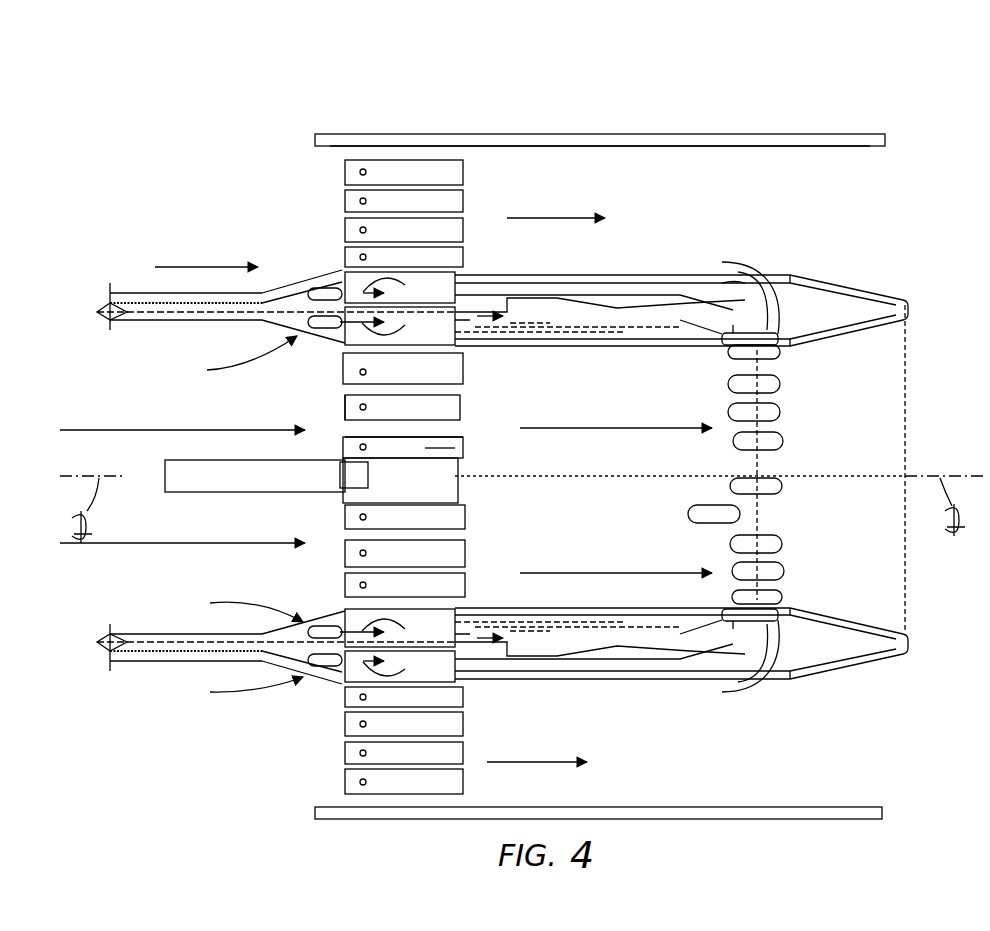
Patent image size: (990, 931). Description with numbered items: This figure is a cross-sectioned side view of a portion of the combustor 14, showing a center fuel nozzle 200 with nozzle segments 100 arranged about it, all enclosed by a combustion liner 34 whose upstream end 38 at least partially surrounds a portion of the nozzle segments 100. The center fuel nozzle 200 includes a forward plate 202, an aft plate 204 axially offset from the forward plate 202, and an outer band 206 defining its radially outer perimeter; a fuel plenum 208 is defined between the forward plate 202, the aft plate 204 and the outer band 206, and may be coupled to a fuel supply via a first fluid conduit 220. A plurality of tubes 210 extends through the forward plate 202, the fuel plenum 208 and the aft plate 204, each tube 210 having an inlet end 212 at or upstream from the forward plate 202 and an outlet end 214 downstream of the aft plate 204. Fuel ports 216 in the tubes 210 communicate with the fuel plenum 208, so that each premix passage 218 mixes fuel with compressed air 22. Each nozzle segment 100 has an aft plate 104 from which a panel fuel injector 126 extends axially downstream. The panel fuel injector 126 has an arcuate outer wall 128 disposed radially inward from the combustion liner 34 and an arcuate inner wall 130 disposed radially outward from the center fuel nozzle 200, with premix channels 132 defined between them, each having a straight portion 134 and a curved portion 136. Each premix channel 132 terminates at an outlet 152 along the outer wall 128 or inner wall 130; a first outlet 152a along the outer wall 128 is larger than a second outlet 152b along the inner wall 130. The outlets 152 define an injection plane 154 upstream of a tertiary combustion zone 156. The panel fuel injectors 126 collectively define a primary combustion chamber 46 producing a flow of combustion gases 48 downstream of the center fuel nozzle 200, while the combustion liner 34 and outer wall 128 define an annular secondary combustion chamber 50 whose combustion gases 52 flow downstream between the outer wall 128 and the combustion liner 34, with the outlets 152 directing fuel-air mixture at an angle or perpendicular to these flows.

The combustor 14 is at (870, 104).
The compressed air 22 is at (238, 264).
The combustion liner 34 is at (521, 133).
The upstream end of the combustion liner 38 is at (381, 131).
The primary combustion chamber 46 is at (655, 463).
The flow of combustion gases 48 is at (690, 427).
The secondary combustion chamber 50 is at (666, 209).
The flow of combustion gases 52 is at (577, 218).
The nozzle segment 100 is at (290, 184).
The aft plate 104 is at (458, 171).
The panel fuel injector 126 is at (581, 272).
The outer wall 128 is at (607, 272).
The inner wall 130 is at (552, 349).
The premix channel 132 is at (645, 323).
The straight portion 134 is at (612, 349).
The curved portion 136 is at (738, 290).
The outlet 152 is at (683, 272).
The first outlet 152a is at (725, 280).
The second outlet 152b is at (790, 352).
The injection plane 154 is at (765, 440).
The tertiary combustion zone 156 is at (962, 435).
The center fuel nozzle 200 is at (305, 557).
The forward plate 202 is at (345, 397).
The aft plate 204 is at (457, 391).
The outer band 206 is at (425, 353).
The fuel plenum 208 is at (440, 489).
The tube 210 is at (428, 428).
The inlet end 212 is at (343, 439).
The outlet end 214 is at (474, 446).
The fuel port 216 is at (368, 450).
The premix passage 218 is at (430, 449).
The first fluid conduit 220 is at (175, 460).